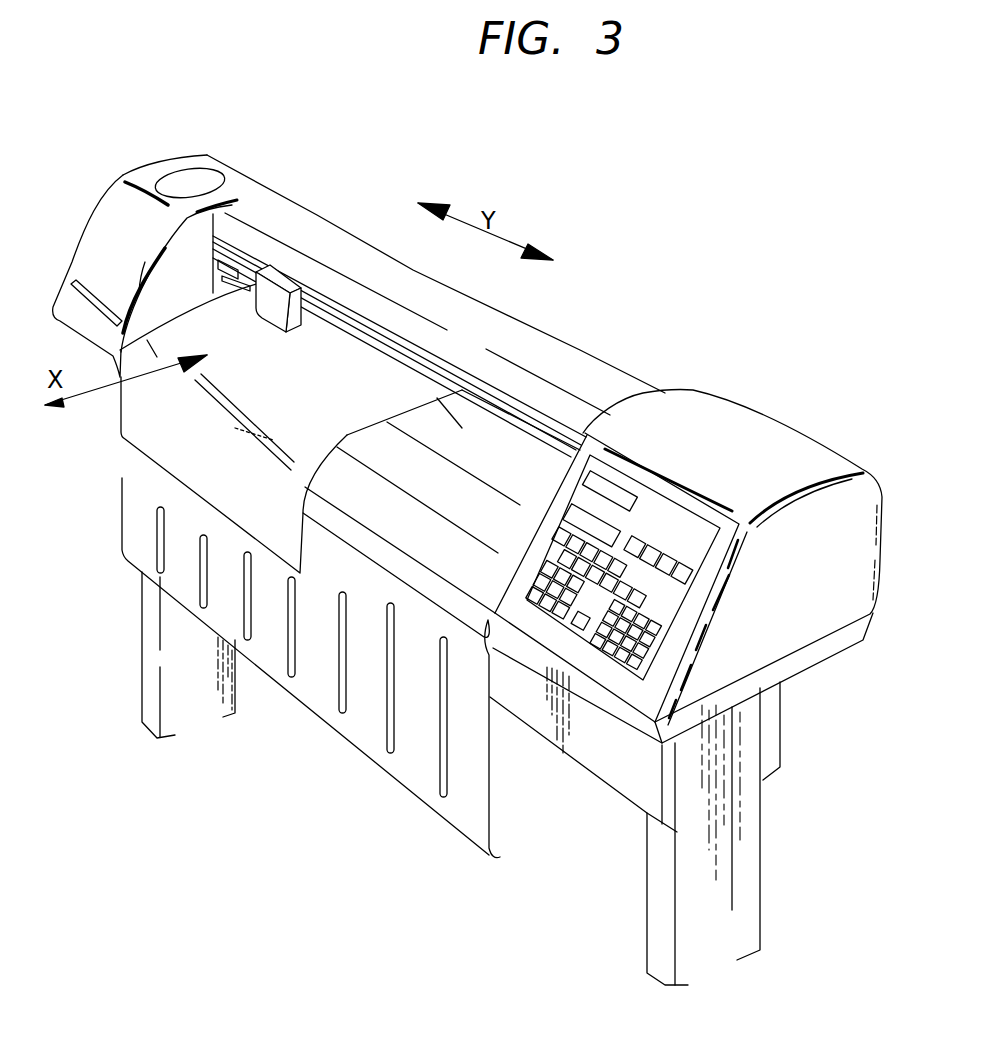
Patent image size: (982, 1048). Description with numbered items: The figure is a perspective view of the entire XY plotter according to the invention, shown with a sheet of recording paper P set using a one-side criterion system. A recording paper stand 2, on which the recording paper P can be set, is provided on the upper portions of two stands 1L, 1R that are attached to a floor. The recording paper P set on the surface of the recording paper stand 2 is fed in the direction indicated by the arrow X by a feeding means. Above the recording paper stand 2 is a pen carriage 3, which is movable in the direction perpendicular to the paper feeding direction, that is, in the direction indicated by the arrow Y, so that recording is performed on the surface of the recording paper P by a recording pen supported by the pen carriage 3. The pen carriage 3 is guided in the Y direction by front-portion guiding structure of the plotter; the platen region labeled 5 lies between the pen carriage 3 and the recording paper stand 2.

The stand 1L is at (177, 705).
The stand 1R is at (733, 910).
The recording paper stand 2 is at (460, 558).
The pen carriage 3 is at (272, 303).
The platen 5 is at (458, 445).
The recording paper P is at (167, 433).